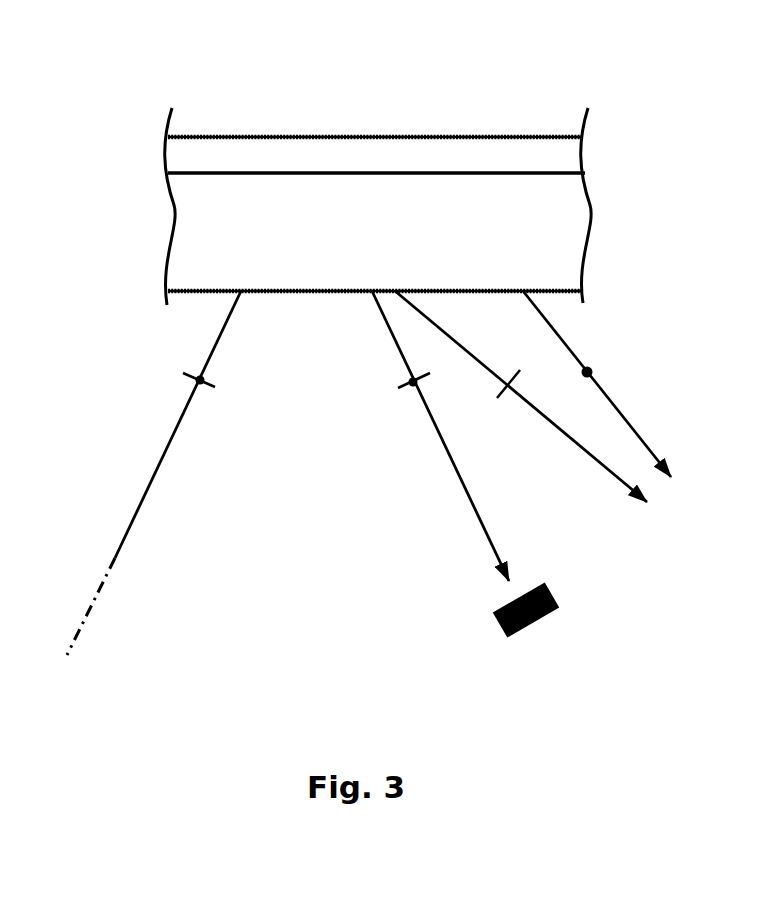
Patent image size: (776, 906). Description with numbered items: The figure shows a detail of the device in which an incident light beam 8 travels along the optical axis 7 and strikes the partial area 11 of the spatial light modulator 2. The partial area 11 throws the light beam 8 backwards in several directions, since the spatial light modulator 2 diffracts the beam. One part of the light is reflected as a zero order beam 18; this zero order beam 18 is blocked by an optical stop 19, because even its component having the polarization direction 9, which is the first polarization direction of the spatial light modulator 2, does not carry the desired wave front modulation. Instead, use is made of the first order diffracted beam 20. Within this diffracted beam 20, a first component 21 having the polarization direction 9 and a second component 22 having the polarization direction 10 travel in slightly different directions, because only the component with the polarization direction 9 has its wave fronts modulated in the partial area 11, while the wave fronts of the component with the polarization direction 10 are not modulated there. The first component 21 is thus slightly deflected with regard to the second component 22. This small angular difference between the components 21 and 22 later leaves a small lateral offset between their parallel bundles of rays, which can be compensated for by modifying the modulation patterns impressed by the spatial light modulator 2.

The spatial light modulator 2 is at (522, 120).
The optical axis 7 is at (95, 605).
The light beam 8 is at (150, 499).
The polarization direction 9 is at (595, 365).
The polarization direction 10 is at (498, 402).
The partial area 11 is at (202, 296).
The zero order beam 18 is at (456, 492).
The optical stop 19 is at (548, 612).
The first order diffracted beam 20 is at (641, 392).
The first component 21 is at (642, 437).
The second component 22 is at (576, 450).